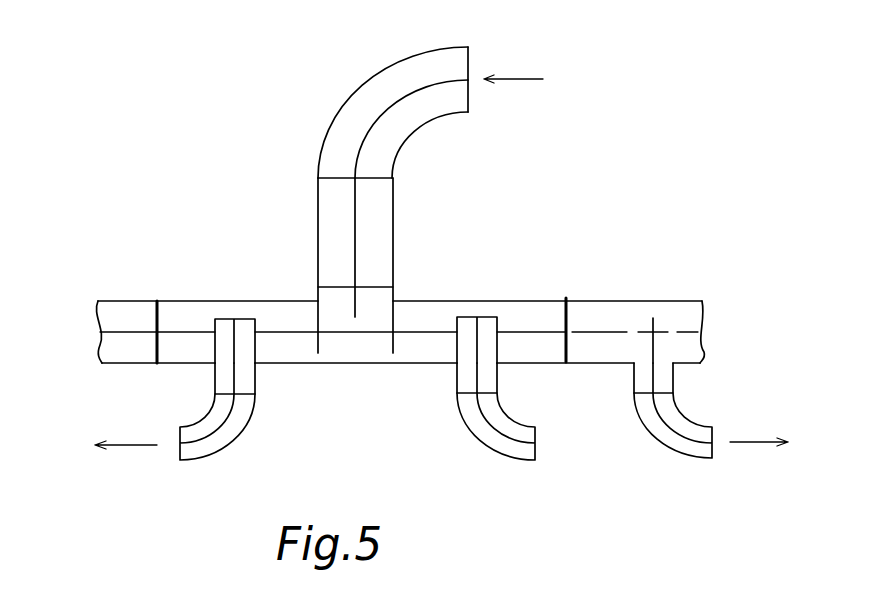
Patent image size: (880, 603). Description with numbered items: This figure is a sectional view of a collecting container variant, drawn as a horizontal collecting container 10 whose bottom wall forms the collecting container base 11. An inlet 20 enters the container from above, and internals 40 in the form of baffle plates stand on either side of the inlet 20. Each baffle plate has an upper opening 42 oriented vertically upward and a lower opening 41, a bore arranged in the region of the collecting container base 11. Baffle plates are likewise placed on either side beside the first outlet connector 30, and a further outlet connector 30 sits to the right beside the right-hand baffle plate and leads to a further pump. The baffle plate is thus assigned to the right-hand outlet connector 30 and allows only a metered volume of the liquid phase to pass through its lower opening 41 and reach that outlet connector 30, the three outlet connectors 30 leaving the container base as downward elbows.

The main pipe / distributor pipe 10 is at (172, 300).
The collecting container base 11 is at (413, 358).
The inlet 20 is at (330, 122).
The outlet connector 30 is at (240, 437).
The internals 40 is at (158, 336).
The lower opening 41 is at (150, 360).
The upper opening 42 is at (150, 310).